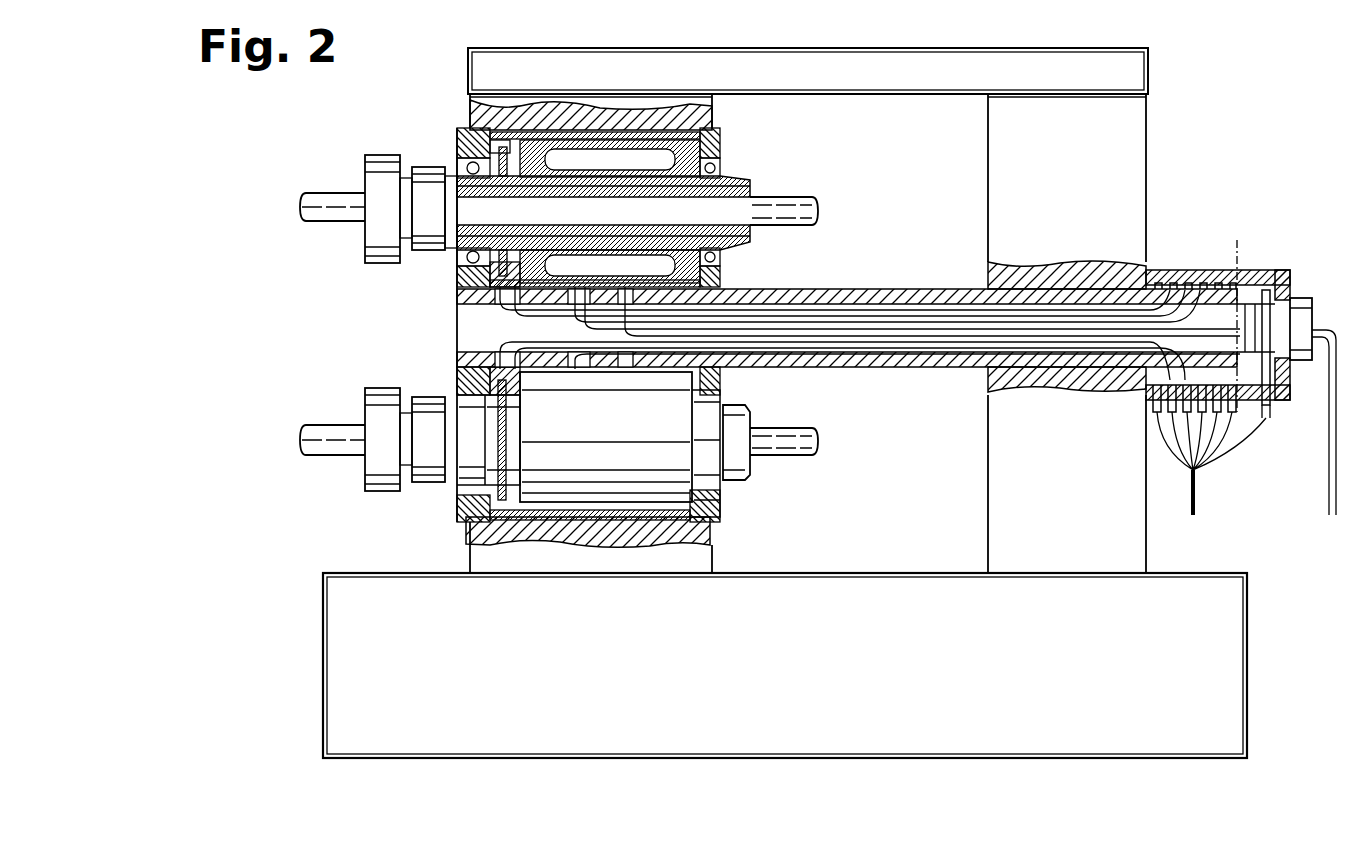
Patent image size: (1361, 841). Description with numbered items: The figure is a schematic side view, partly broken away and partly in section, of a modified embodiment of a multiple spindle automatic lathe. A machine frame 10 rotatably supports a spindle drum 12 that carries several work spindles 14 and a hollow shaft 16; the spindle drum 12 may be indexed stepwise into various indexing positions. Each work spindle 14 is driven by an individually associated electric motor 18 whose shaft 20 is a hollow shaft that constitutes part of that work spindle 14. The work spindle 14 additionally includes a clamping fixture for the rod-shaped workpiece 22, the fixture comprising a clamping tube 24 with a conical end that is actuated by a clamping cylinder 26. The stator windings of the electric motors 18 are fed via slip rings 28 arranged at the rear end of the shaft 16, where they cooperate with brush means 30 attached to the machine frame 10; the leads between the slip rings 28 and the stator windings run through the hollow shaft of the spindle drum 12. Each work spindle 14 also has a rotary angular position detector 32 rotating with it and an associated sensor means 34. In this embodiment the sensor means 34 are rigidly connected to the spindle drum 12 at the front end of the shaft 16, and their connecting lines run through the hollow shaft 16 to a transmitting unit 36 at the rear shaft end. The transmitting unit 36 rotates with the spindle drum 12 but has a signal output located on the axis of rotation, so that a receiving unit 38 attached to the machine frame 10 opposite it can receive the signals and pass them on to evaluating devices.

The machine frame 10 is at (1188, 563).
The spindle drum 12 is at (450, 310).
The work spindle 14 is at (755, 181).
The shaft 16 is at (905, 296).
The electric motor 18 is at (703, 148).
The shaft 20 is at (722, 180).
The rod-shaped workpiece 22 is at (812, 208).
The clamping tube 24 is at (745, 233).
The clamping cylinder 26 is at (380, 168).
The slip rings 28 is at (1196, 288).
The brush means 30 is at (1140, 404).
The rotary angular position detector 32 is at (496, 152).
The sensor means 34 is at (458, 278).
The transmitting unit 36 is at (1266, 293).
The receiving unit 38 is at (1307, 300).